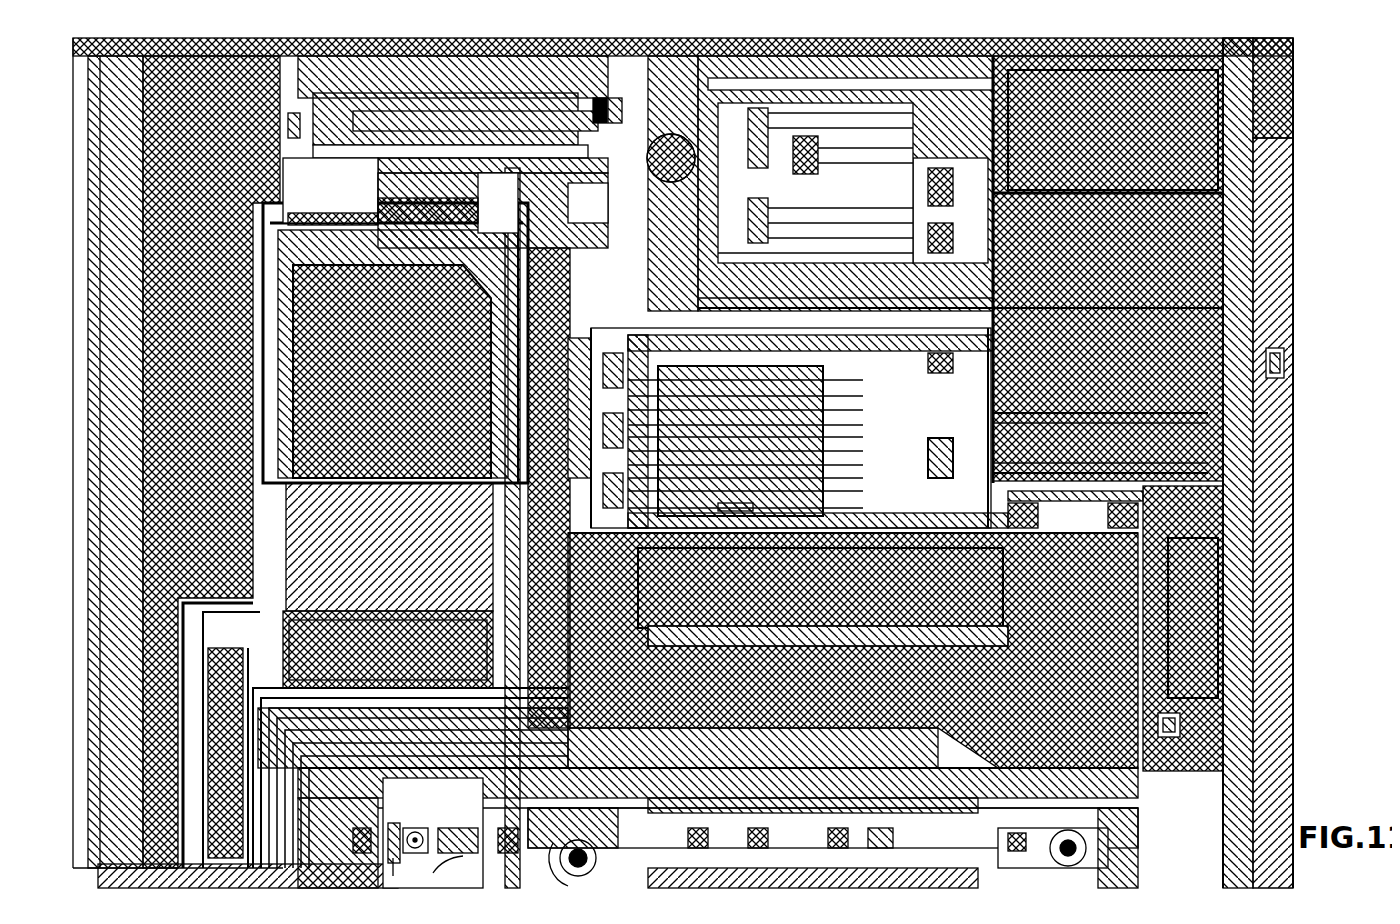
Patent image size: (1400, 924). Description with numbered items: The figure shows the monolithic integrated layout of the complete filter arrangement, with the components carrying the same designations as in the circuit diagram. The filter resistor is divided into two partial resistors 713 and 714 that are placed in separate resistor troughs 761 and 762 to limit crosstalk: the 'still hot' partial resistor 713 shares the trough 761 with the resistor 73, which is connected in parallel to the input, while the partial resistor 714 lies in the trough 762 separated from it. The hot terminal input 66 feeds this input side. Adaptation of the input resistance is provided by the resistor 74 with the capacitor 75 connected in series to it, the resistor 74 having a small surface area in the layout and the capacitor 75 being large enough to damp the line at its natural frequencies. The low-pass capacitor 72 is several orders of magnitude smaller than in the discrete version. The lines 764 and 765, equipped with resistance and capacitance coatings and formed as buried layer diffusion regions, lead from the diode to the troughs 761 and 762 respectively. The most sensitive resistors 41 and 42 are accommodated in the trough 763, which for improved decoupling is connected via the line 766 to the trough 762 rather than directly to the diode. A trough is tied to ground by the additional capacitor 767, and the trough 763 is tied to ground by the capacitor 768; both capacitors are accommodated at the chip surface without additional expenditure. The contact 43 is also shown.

The partial resistor 713 is at (350, 87).
The resistor 73 is at (360, 160).
The resistor trough 761 is at (655, 126).
The line 764 is at (529, 210).
The resistor trough 762 is at (950, 160).
The partial resistor 714 is at (815, 184).
The capacitor 767 is at (1152, 70).
The line 765 is at (555, 350).
The hot terminal input 66 is at (480, 355).
The resistor 41 is at (845, 375).
The trough 763 is at (960, 365).
The capacitor 768 is at (1050, 448).
The resistor 42 is at (845, 495).
The capacitor 72 is at (798, 593).
The resistor 74 is at (384, 548).
The capacitor 75 is at (134, 658).
The line 766 is at (1116, 628).
The contact 43 is at (432, 804).